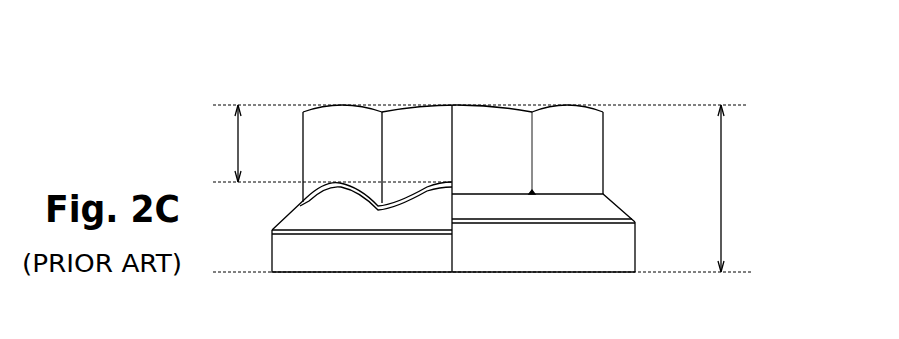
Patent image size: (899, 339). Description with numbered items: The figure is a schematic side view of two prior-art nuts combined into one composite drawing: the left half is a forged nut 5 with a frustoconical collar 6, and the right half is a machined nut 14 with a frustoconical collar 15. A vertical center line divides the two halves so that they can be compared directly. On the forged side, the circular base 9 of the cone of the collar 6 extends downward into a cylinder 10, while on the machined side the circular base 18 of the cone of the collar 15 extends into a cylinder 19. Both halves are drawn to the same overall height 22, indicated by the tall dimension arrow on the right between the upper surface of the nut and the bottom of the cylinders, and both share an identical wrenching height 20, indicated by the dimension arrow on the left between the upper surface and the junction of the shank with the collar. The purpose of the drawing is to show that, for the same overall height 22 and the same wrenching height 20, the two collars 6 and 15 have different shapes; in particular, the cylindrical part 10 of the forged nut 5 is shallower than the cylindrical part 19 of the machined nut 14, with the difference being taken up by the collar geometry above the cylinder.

The forged nut 5 is at (354, 90).
The machined nut 14 is at (535, 90).
The frustoconical collar 6 is at (303, 219).
The circular base 9 is at (272, 230).
The cylinder 10 is at (335, 252).
The frustoconical collar 15 is at (598, 208).
The circular base 18 is at (635, 223).
The cylinder 19 is at (583, 255).
The wrenching height 20 is at (236, 153).
The overall height 22 is at (722, 190).